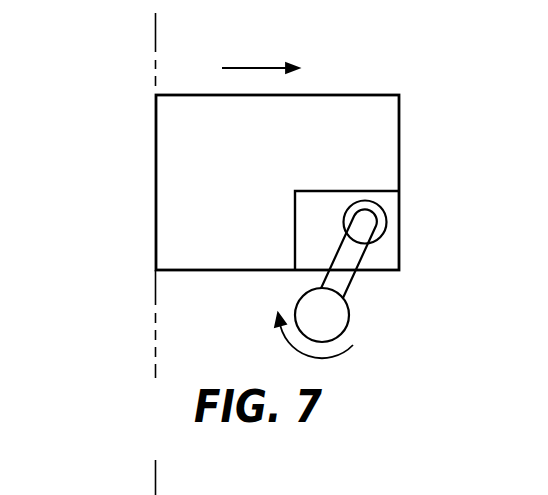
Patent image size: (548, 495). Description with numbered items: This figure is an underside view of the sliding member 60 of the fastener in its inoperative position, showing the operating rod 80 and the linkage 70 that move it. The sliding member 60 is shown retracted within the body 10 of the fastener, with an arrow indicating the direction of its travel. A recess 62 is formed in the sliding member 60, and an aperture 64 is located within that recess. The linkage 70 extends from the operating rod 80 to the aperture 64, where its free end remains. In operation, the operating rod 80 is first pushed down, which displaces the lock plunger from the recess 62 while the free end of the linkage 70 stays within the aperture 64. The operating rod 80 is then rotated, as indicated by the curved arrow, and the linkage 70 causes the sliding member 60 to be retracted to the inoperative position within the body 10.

The body 10 is at (185, 42).
The sliding member 60 is at (185, 181).
The recess 62 is at (313, 223).
The aperture 64 is at (375, 203).
The linkage 70 is at (338, 274).
The operating rod 80 is at (338, 322).